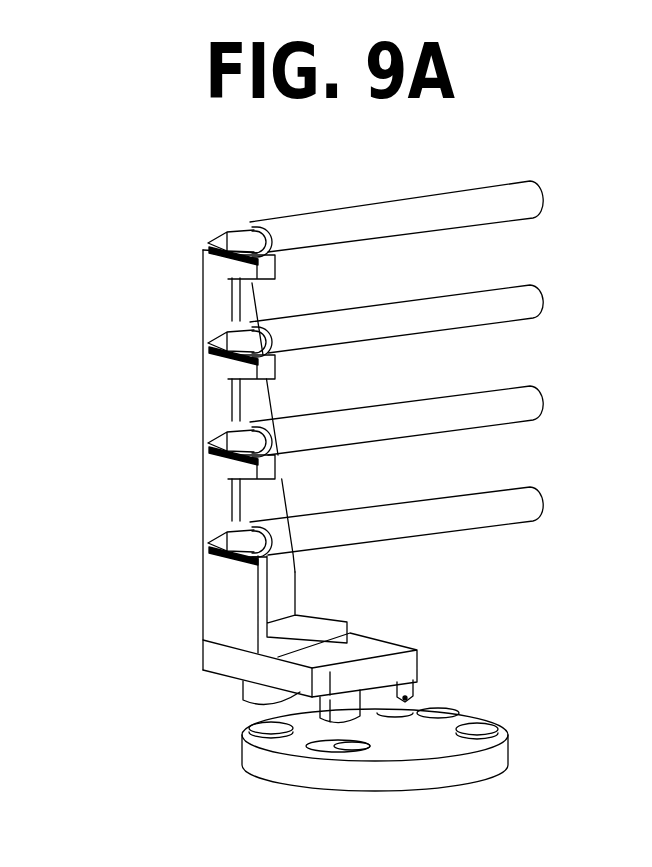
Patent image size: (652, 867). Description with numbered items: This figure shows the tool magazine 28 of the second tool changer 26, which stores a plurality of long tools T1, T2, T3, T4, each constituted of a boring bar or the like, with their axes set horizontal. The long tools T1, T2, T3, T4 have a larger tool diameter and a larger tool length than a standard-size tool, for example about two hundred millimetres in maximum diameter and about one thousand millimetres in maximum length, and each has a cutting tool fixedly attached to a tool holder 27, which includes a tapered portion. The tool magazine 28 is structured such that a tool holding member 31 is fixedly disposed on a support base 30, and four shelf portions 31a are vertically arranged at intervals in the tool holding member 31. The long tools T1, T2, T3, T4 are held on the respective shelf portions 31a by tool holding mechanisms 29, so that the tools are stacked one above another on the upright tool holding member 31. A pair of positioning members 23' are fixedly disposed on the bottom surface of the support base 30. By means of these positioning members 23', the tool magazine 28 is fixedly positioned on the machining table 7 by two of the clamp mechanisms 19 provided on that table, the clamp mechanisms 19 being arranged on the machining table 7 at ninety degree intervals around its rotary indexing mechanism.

The second tool changer 26 is at (113, 311).
The tool holder 27 is at (207, 243).
The tool holding mechanism 29 is at (264, 233).
The tool holding member 31 is at (203, 388).
The shelf portion 31a is at (247, 278).
The tool magazine 28 is at (204, 609).
The support base 30 is at (405, 641).
The positioning member 23' is at (297, 761).
The clamp mechanism 19 is at (254, 748).
The machining table 7 is at (511, 746).
The long tool T1 is at (512, 183).
The long tool T2 is at (512, 287).
The long tool T3 is at (512, 388).
The long tool T4 is at (512, 489).